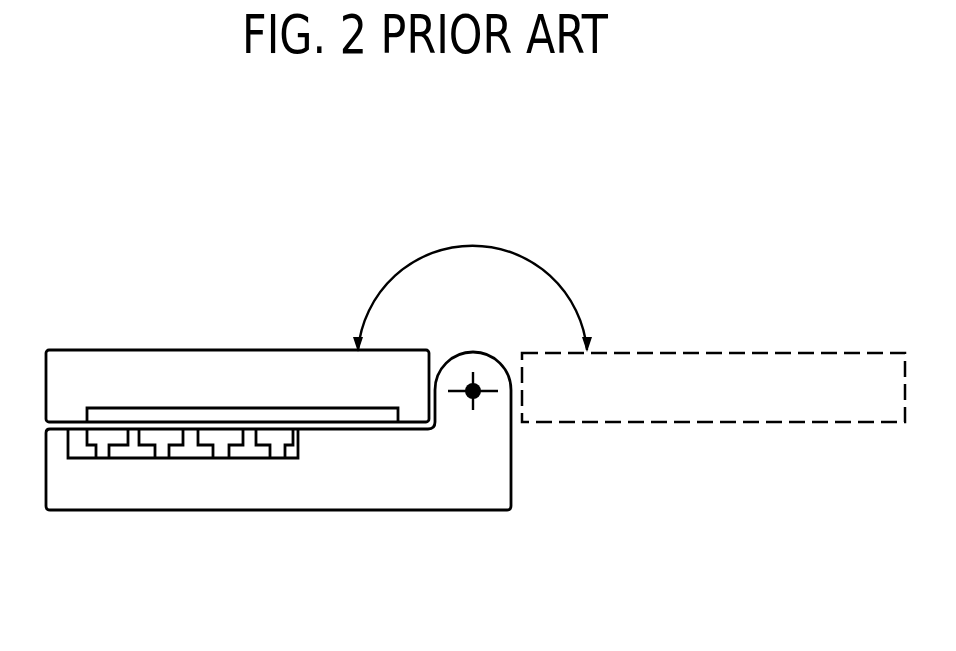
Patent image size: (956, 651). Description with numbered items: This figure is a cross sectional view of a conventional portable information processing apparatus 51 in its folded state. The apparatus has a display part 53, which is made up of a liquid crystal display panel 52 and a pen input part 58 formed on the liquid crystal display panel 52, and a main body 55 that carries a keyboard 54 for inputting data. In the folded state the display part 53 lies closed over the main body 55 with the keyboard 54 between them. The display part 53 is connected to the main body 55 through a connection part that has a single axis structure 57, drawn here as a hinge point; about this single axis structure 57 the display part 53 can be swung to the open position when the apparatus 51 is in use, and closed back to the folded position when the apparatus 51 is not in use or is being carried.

The portable information processing apparatus 51 is at (387, 170).
The liquid crystal display panel 52 is at (242, 344).
The display part 53 is at (117, 374).
The keyboard 54 is at (99, 436).
The main body 55 is at (248, 495).
The single axis structure 57 is at (475, 388).
The pen input part 58 is at (203, 412).